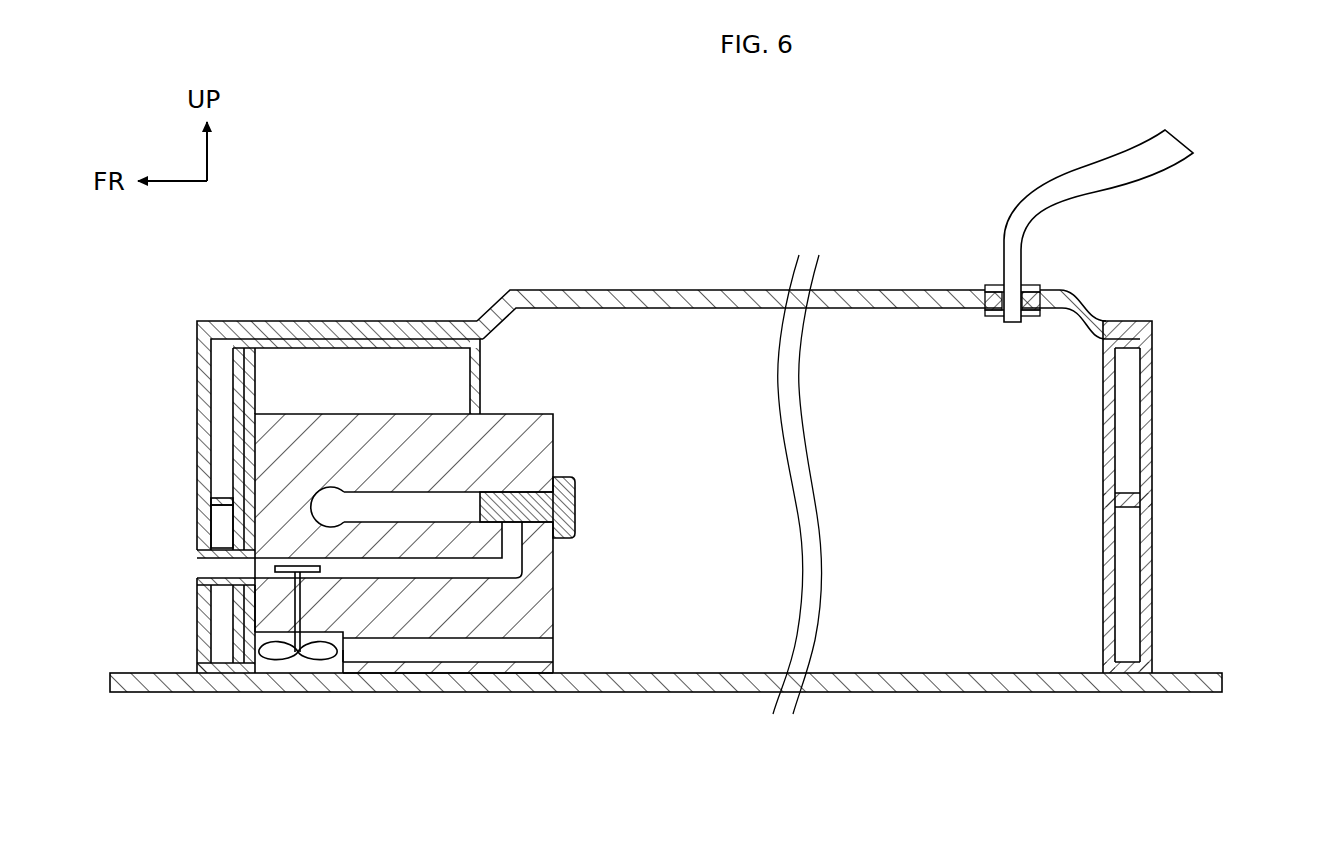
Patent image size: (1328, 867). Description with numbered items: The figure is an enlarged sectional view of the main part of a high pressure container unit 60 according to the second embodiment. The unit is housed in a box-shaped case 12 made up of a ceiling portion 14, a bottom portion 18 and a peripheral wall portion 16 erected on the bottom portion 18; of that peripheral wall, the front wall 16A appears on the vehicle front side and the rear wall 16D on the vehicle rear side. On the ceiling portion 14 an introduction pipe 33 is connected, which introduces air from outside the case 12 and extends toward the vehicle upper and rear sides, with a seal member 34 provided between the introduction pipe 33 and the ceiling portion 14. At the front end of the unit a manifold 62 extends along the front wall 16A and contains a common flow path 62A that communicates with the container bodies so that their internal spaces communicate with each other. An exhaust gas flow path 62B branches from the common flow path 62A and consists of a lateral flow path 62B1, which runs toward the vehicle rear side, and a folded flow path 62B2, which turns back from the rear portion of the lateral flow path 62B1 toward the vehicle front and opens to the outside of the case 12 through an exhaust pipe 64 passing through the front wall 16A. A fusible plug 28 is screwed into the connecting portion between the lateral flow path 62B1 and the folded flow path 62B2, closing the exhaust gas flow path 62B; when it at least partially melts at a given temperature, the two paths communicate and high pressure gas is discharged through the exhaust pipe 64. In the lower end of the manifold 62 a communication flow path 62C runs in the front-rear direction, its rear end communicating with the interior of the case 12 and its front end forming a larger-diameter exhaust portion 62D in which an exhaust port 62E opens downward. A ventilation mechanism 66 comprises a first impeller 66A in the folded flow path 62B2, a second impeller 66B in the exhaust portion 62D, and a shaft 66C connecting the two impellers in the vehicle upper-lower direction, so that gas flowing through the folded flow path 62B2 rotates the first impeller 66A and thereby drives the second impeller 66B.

The case 12 is at (712, 414).
The ceiling portion 14 is at (685, 290).
The peripheral wall portion 16 is at (712, 452).
The front wall 16A is at (197, 395).
The rear wall 16D is at (1152, 400).
The bottom portion 18 is at (688, 694).
The fusible plug 28 is at (578, 490).
The introduction pipe 33 is at (1022, 210).
The seal member 34 is at (988, 283).
The high pressure container unit 60 is at (373, 456).
The manifold 62 is at (421, 513).
The common flow path 62A is at (320, 487).
The exhaust gas flow path 62B is at (439, 547).
The lateral flow path 62B1 is at (467, 490).
The folded flow path 62B2 is at (432, 590).
The communication flow path 62C is at (545, 648).
The exhaust portion 62D is at (263, 662).
The exhaust port 62E is at (338, 674).
The exhaust pipe 64 is at (213, 548).
The ventilation mechanism 66 is at (278, 616).
The first impeller 66A is at (288, 564).
The second impeller 66B is at (317, 660).
The shaft 66C is at (350, 662).